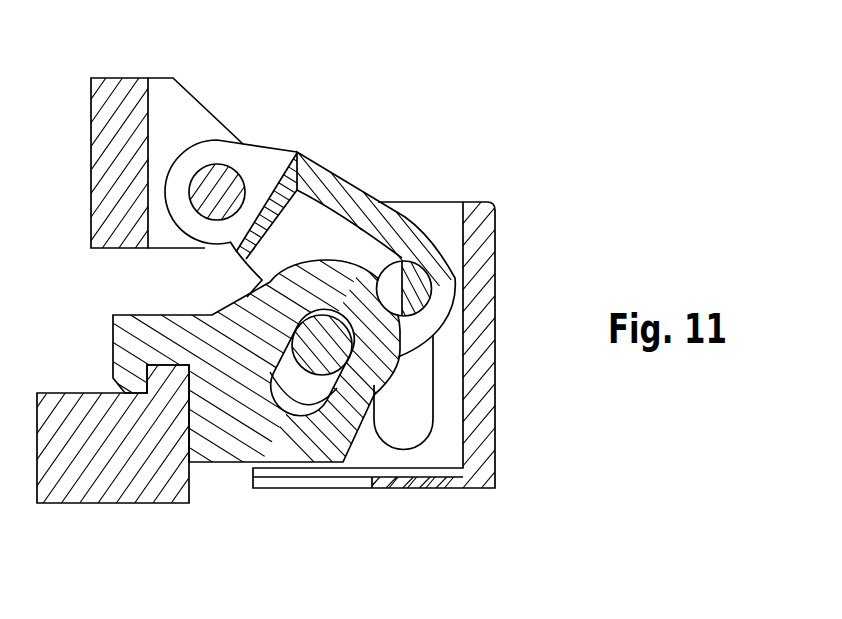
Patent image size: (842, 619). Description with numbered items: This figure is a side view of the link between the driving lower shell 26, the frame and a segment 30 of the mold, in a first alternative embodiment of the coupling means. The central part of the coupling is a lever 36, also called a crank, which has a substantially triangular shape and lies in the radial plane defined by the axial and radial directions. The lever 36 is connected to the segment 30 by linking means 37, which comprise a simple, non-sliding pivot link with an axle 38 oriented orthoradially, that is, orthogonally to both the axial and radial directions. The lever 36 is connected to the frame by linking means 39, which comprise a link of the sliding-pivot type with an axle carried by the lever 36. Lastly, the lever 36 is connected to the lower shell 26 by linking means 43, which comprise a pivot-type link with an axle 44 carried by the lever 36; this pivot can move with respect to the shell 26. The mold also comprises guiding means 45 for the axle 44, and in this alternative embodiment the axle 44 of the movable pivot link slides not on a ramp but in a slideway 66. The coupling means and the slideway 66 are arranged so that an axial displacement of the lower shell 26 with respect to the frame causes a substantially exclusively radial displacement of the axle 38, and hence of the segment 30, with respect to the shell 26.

The lower shell 26 is at (117, 473).
The segment 30 is at (115, 127).
The lever 36 is at (345, 204).
The means for linking the lever to the segment 37 is at (235, 96).
The axle 38 is at (227, 178).
The means for linking the lever to the frame 39 is at (263, 326).
The means for linking the lever to the lower shell 43 is at (444, 217).
The axle 44 is at (373, 386).
The means for guiding the axle 45 is at (250, 388).
The slideway 66 is at (297, 376).